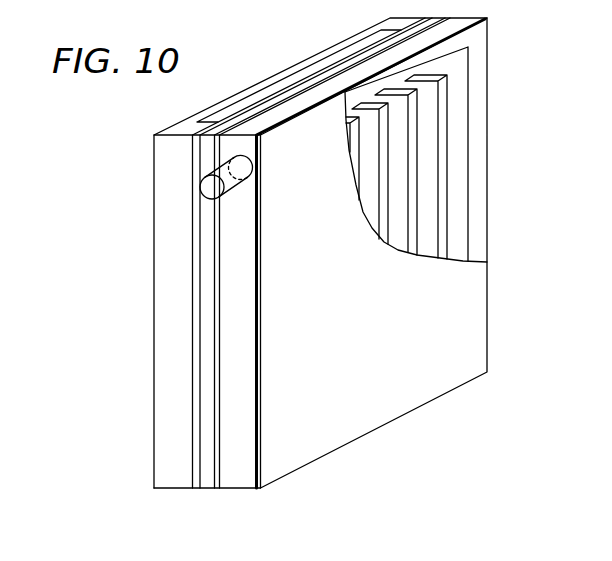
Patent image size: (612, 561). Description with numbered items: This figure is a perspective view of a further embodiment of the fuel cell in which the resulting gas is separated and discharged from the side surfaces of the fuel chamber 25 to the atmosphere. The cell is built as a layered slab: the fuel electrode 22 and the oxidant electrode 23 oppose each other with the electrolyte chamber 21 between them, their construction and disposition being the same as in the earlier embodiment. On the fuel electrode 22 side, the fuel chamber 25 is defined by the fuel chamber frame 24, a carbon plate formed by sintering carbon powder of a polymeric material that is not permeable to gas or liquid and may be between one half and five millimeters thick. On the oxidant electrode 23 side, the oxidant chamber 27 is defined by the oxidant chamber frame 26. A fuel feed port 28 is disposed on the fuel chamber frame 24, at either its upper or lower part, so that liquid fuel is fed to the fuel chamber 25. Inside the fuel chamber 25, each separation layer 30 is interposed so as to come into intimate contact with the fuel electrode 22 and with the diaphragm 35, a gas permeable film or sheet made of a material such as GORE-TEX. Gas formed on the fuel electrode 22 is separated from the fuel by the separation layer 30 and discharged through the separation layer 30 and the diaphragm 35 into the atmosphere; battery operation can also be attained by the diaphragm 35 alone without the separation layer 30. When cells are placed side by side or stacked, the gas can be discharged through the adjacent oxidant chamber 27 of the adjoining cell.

The electrolyte chamber 21 is at (205, 482).
The fuel electrode 22 is at (218, 482).
The oxidant electrode 23 is at (193, 483).
The fuel chamber frame 24 is at (243, 482).
The fuel chamber 25 is at (461, 105).
The oxidant chamber frame 26 is at (163, 163).
The oxidant chamber 27 is at (247, 97).
The fuel feed port 28 is at (205, 189).
The gas separation layer 30 is at (443, 154).
The diaphragm 35 is at (365, 422).